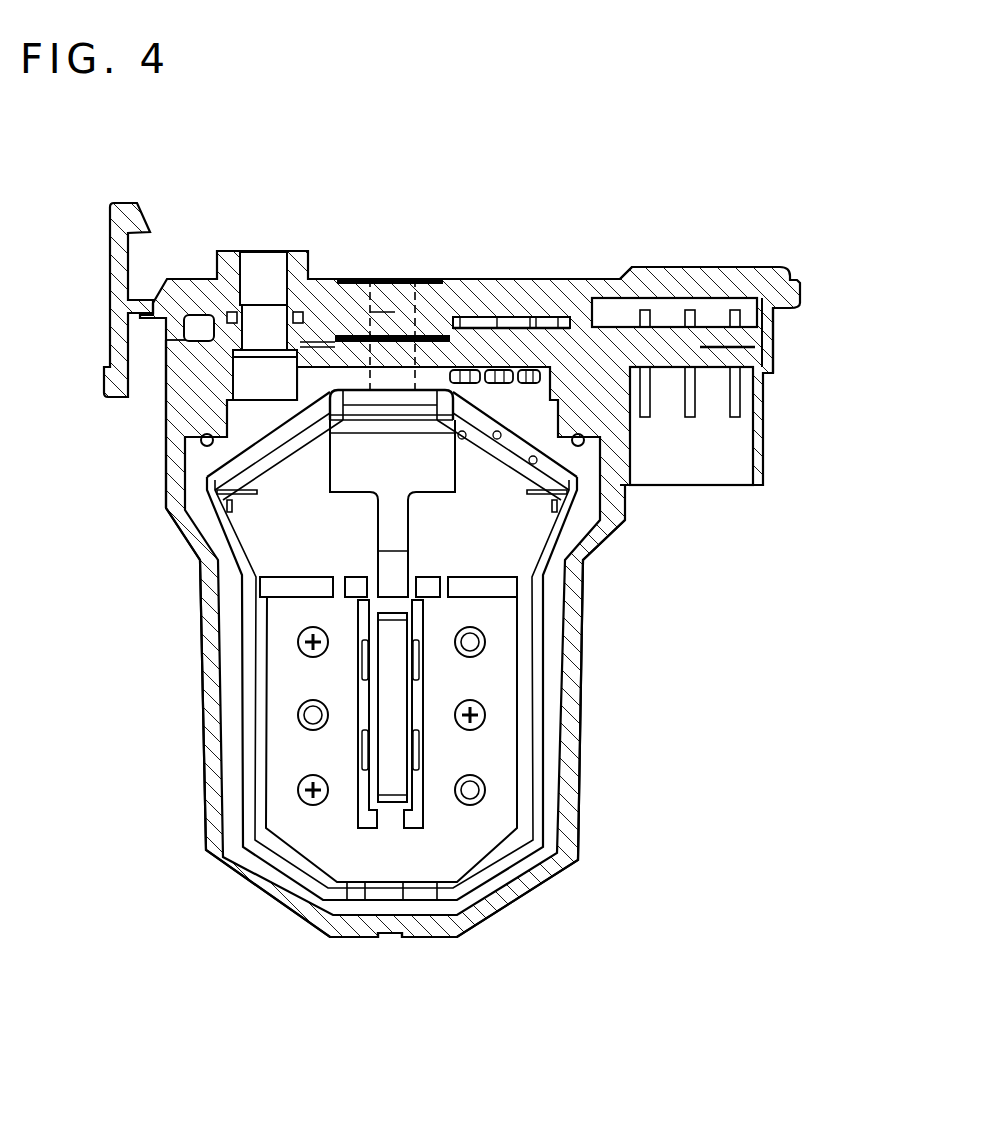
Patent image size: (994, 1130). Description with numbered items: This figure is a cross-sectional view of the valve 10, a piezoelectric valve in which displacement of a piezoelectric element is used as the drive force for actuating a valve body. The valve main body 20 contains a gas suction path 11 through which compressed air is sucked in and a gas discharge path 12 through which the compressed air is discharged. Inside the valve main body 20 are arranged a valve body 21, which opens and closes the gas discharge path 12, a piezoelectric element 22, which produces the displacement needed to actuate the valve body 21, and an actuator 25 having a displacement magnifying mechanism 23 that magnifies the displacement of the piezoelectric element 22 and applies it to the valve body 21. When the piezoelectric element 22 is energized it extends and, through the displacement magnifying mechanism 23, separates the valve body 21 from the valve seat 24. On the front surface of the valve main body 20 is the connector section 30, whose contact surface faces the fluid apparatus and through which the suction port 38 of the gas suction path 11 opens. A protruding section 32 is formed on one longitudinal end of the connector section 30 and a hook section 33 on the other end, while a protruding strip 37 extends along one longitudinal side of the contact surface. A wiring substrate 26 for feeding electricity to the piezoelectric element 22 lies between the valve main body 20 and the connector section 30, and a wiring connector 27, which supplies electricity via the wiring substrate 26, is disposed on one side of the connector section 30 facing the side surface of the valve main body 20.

The valve 10 is at (163, 690).
The gas suction path 11 is at (262, 290).
The gas discharge path 12 is at (390, 320).
The valve main body 20 is at (570, 771).
The valve body 21 is at (367, 408).
The piezoelectric element 22 is at (393, 732).
The displacement magnifying mechanism 23 is at (293, 543).
The valve seat 24 is at (422, 397).
The actuator 25 is at (547, 597).
The wiring substrate 26 is at (578, 340).
The wiring connector 27 is at (757, 439).
The connector section 30 is at (548, 240).
The protruding section 32 is at (808, 282).
The hook section 33 is at (92, 230).
The protruding strip 37 is at (690, 270).
The suction port 38 is at (268, 247).